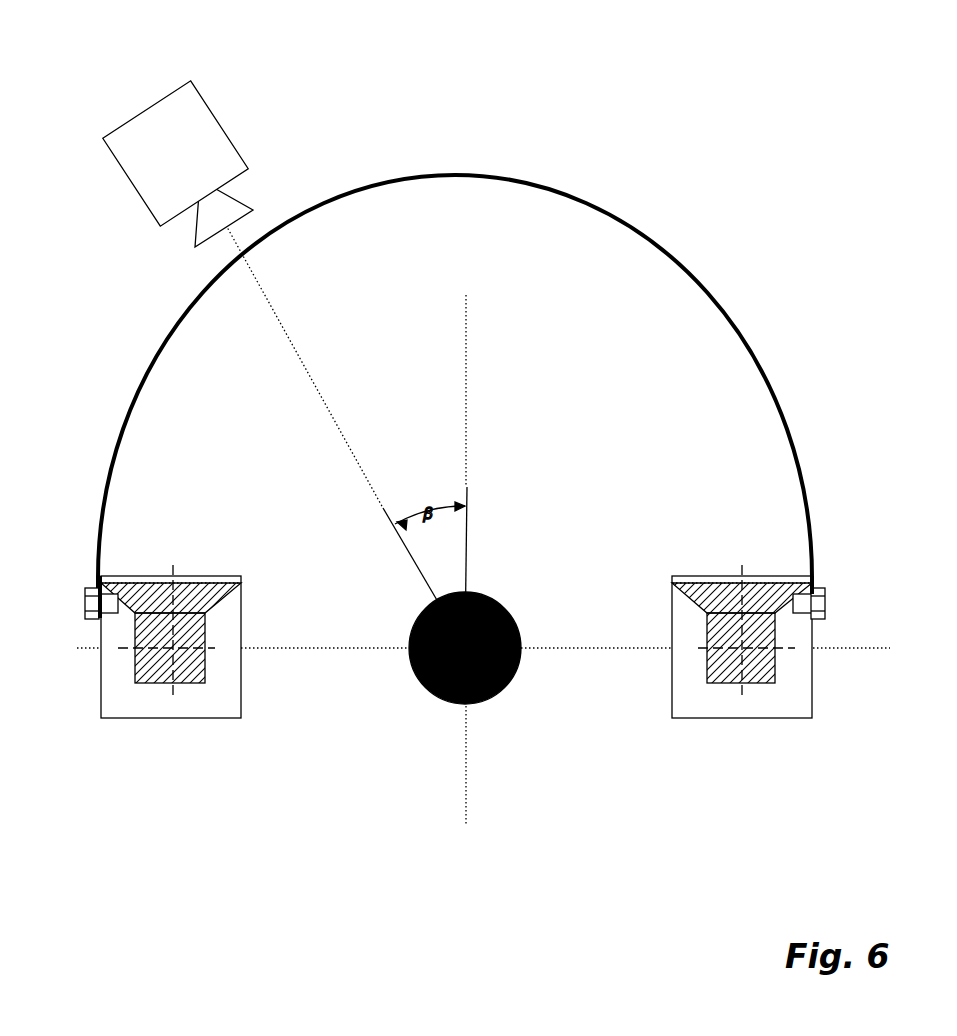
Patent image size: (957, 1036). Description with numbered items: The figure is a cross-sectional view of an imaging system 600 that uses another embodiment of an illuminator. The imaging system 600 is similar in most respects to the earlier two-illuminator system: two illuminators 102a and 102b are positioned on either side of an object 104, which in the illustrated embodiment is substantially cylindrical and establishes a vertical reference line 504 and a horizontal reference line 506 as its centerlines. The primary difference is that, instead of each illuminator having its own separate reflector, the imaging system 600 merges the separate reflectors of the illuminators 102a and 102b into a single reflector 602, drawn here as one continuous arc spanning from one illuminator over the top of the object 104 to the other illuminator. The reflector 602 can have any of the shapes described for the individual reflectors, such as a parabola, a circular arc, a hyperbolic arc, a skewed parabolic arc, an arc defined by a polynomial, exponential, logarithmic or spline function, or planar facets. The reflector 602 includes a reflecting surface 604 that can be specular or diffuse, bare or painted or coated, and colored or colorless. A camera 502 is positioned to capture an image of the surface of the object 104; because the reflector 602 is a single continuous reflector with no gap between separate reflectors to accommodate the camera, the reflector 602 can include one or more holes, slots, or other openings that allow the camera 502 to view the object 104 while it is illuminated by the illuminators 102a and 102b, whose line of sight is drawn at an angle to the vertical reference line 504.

The illuminator 102a is at (164, 678).
The illuminator 102b is at (743, 699).
The object 104 is at (493, 618).
The camera 502 is at (153, 113).
The vertical reference line 504 is at (467, 378).
The horizontal reference line 506 is at (370, 649).
The imaging system 600 is at (705, 100).
The reflector 602 is at (667, 242).
The reflecting surface 604 is at (496, 178).